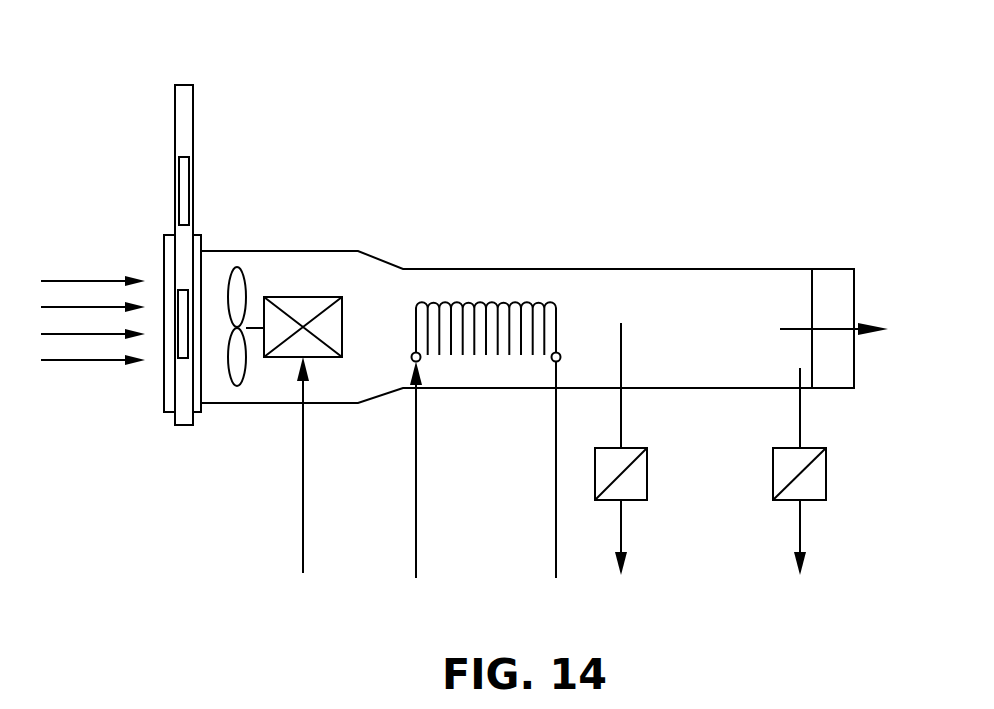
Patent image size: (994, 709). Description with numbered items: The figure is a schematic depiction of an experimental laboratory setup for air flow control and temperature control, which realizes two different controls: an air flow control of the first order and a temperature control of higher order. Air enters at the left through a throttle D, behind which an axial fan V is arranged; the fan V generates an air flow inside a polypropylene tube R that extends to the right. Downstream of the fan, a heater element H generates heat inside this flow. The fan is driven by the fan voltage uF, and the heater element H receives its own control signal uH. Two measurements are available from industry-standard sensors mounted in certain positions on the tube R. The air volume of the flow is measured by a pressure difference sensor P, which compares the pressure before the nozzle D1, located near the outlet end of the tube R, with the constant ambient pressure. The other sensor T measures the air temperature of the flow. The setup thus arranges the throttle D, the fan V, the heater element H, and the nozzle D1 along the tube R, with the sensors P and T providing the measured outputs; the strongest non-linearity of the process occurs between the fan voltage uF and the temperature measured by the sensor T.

The throttle D is at (203, 118).
The nozzle D1 is at (813, 365).
The polypropylene tube R is at (748, 269).
The axial fan V is at (303, 295).
The heater element H is at (483, 303).
The temperature sensor T is at (621, 449).
The pressure difference sensor P is at (799, 471).
The fan voltage uF is at (317, 465).
The heater control signal uH is at (483, 470).